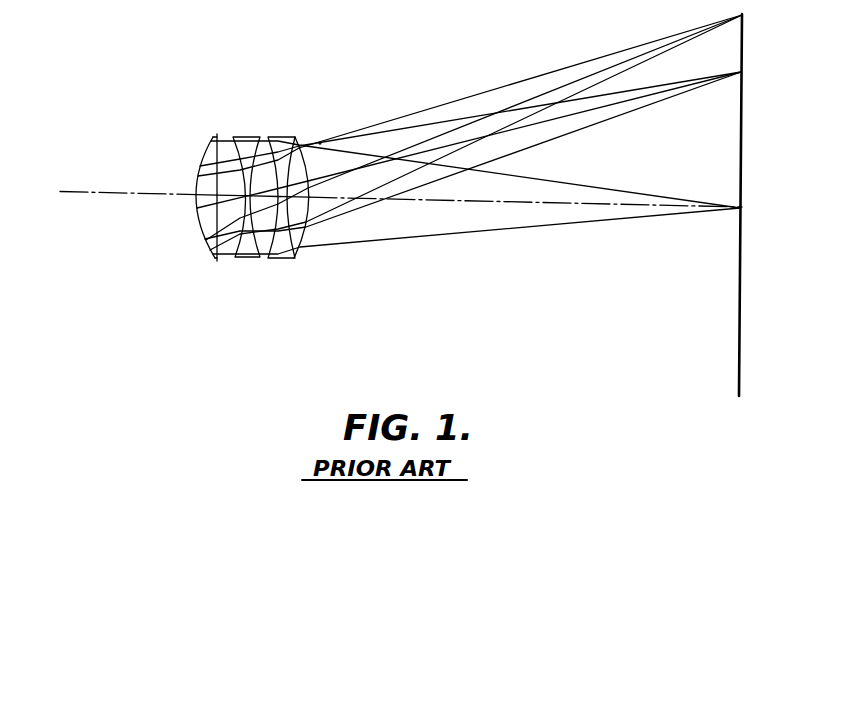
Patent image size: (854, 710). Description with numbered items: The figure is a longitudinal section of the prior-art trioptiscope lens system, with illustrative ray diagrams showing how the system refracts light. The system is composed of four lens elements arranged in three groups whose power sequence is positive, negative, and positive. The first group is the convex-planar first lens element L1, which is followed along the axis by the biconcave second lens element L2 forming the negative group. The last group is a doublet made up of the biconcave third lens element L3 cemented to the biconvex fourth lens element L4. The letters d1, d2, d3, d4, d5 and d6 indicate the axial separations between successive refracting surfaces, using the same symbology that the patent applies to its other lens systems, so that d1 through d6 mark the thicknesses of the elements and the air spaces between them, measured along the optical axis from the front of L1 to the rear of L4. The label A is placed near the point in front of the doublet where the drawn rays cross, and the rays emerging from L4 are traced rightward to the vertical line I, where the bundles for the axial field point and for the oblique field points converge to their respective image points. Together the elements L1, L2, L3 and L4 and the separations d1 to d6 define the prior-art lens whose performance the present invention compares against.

The first lens element L1 is at (217, 136).
The second lens element L2 is at (243, 137).
The third lens element L3 is at (273, 137).
The fourth lens element L4 is at (300, 137).
The aperture stop A is at (321, 142).
The axial separation d1 is at (196, 207).
The axial separation d2 is at (222, 230).
The axial separation d3 is at (242, 254).
The axial separation d4 is at (266, 170).
The axial separation d5 is at (288, 257).
The axial separation d6 is at (301, 243).
The image plane I is at (740, 392).